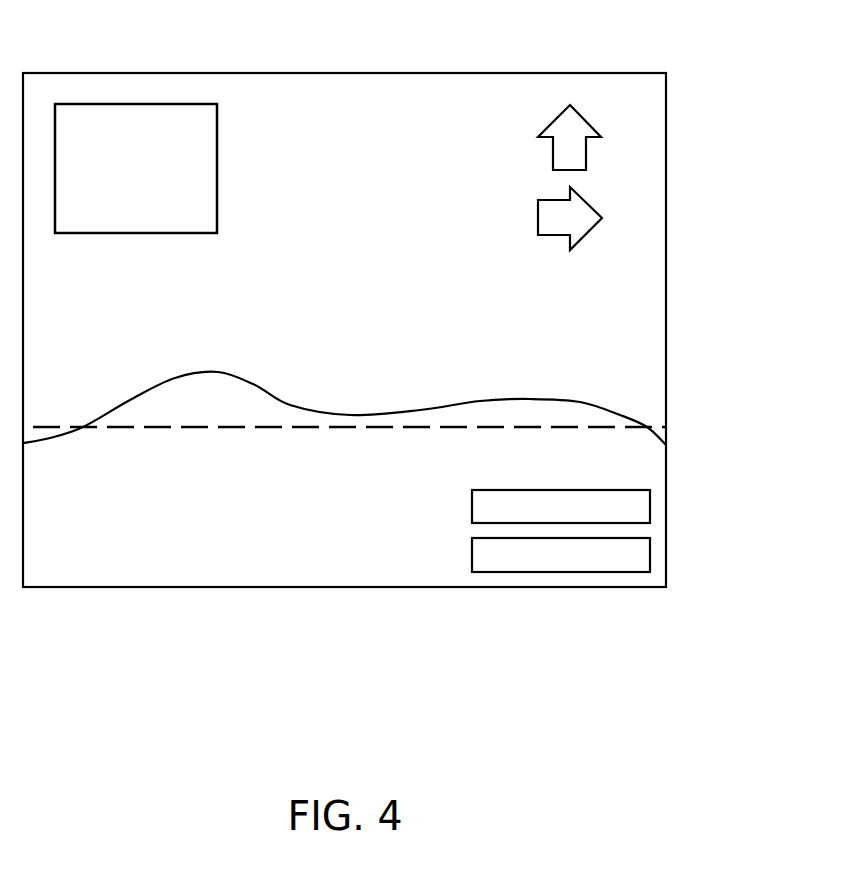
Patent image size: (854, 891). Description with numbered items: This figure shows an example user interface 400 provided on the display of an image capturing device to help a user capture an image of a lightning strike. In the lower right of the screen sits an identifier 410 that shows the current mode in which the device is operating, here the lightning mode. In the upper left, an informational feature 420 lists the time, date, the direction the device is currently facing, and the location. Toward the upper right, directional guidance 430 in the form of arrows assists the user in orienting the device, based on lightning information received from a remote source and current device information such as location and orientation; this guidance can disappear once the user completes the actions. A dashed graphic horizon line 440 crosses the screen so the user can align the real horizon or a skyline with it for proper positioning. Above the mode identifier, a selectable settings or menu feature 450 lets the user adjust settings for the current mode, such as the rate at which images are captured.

The user interface 400 is at (583, 57).
The identifier 410 is at (552, 574).
The informational feature 420 is at (137, 101).
The directional guidance 430 is at (620, 189).
The graphic horizon line 440 is at (216, 429).
The settings or menu feature 450 is at (472, 526).